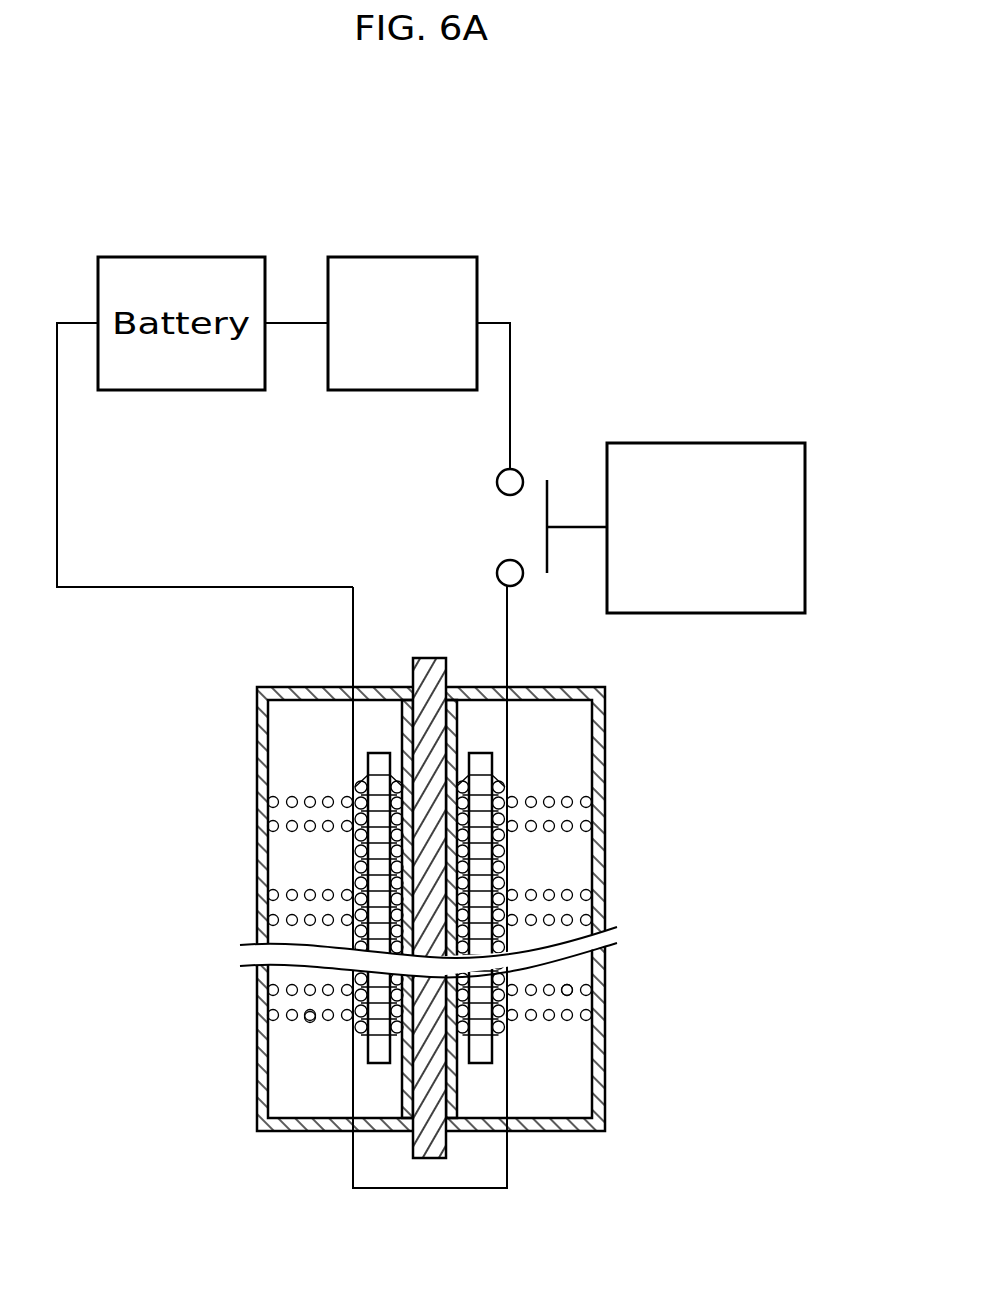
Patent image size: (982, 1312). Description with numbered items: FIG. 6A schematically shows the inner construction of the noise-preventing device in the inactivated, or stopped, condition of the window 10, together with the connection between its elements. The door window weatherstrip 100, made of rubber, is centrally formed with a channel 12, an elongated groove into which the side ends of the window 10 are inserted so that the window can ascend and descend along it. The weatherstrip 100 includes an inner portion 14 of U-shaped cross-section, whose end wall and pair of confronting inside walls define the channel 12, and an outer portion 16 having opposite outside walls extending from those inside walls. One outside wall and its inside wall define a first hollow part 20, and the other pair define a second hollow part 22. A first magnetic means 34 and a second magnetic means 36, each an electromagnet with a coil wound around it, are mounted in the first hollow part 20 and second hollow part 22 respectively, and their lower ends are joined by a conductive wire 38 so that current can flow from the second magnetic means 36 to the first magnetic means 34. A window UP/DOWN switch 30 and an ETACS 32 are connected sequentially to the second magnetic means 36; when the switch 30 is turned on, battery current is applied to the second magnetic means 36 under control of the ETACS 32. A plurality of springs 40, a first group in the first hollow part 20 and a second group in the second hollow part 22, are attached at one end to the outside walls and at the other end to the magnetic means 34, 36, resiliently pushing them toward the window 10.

The window 10 is at (435, 657).
The channel 12 is at (450, 690).
The inner portion 14 is at (408, 727).
The outer portion 16 is at (257, 817).
The first hollow part 20 is at (300, 720).
The second hollow part 22 is at (555, 755).
The window UP/DOWN switch 30 is at (697, 442).
The ETACS 32 is at (400, 255).
The first magnetic means 34 is at (347, 856).
The second magnetic means 36 is at (514, 853).
The conductive wire 38 is at (507, 1068).
The springs 40 is at (308, 1017).
The door window weatherstrip 100 is at (456, 835).